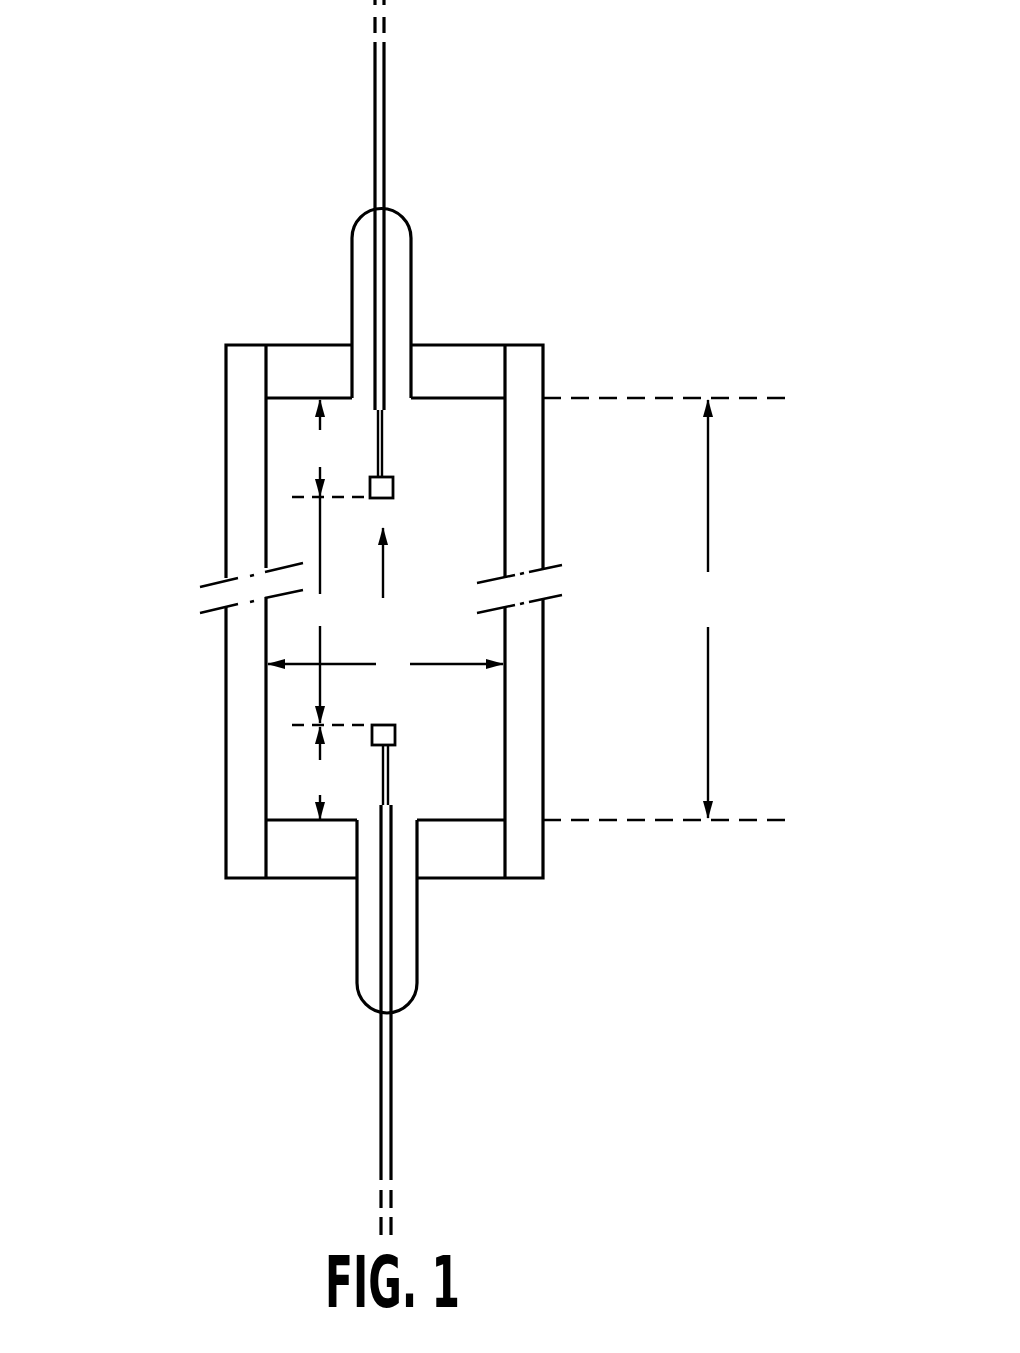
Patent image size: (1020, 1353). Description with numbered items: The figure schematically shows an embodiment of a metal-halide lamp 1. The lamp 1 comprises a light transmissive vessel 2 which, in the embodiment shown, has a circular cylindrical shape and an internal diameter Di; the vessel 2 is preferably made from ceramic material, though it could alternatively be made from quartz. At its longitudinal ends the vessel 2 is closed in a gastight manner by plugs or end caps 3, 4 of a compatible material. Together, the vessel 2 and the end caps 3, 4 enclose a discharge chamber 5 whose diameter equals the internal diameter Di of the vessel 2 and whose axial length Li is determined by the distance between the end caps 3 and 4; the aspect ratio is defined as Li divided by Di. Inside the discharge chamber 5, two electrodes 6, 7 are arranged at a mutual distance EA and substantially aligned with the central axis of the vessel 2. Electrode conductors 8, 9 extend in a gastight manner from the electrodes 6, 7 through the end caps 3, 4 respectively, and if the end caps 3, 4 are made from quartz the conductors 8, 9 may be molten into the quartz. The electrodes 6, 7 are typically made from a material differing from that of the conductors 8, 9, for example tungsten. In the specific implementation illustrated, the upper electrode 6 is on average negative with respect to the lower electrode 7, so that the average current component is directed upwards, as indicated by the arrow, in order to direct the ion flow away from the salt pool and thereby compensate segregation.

The metal-halide lamp 1 is at (477, 617).
The light transmissive vessel 2 is at (226, 660).
The end cap 3 is at (464, 343).
The end cap 4 is at (467, 880).
The discharge chamber 5 is at (295, 717).
The upper electrode 6 is at (393, 485).
The lower electrode 7 is at (395, 733).
The electrode conductor 8 is at (385, 172).
The electrode conductor 9 is at (391, 1066).